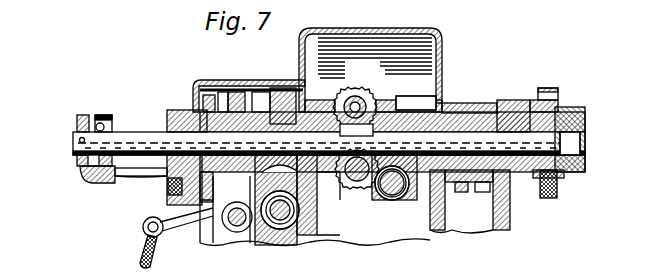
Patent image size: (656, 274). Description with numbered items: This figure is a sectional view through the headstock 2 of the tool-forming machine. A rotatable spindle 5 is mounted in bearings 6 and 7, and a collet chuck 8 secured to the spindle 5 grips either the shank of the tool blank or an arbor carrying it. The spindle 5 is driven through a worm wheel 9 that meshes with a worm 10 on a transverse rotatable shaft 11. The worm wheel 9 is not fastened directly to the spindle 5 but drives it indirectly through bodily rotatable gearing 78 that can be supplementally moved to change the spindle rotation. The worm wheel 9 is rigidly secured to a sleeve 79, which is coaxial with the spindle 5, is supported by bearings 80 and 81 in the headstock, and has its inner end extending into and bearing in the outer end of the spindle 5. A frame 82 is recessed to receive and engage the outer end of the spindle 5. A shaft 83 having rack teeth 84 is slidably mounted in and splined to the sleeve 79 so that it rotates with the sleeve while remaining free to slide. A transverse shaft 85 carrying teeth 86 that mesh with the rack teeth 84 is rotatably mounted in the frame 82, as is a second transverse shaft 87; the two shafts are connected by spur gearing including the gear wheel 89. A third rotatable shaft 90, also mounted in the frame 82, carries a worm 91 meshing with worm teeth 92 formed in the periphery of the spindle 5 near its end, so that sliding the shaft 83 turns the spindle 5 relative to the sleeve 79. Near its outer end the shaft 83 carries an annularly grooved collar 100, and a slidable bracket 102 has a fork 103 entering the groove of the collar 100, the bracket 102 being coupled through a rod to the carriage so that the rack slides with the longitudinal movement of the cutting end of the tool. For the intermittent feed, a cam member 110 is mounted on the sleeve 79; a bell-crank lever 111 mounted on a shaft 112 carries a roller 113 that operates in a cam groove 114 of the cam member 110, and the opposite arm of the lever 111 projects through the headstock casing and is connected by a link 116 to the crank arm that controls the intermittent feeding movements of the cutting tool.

The headstock 2 is at (470, 63).
The spindle 5 is at (510, 106).
The bearing 6 is at (450, 175).
The bearing 7 is at (482, 181).
The collet chuck 8 is at (582, 112).
The worm wheel 9 is at (283, 88).
The worm 10 is at (288, 230).
The transverse rotatable shaft 11 is at (268, 228).
The gearing 78 is at (425, 78).
The sleeve 79 is at (316, 120).
The bearing 80 is at (180, 110).
The bearing 81 is at (323, 182).
The frame 82 is at (401, 196).
The shaft 83 is at (160, 137).
The rack teeth 84 is at (446, 178).
The transverse shaft 85 is at (352, 186).
The teeth 86 is at (374, 196).
The transverse shaft 87 is at (372, 103).
The spur gear wheel 89 is at (342, 100).
The third rotatable shaft 90 is at (398, 196).
The worm 91 is at (392, 190).
The worm teeth 92 is at (396, 118).
The annularly grooved collar 100 is at (104, 117).
The bracket 102 is at (96, 183).
The fork 103 is at (78, 158).
The cam member 110 is at (222, 80).
The bell-crank lever 111 is at (170, 238).
The shaft 112 is at (242, 233).
The roller 113 is at (170, 192).
The cam groove 114 is at (245, 92).
The link 116 is at (144, 259).